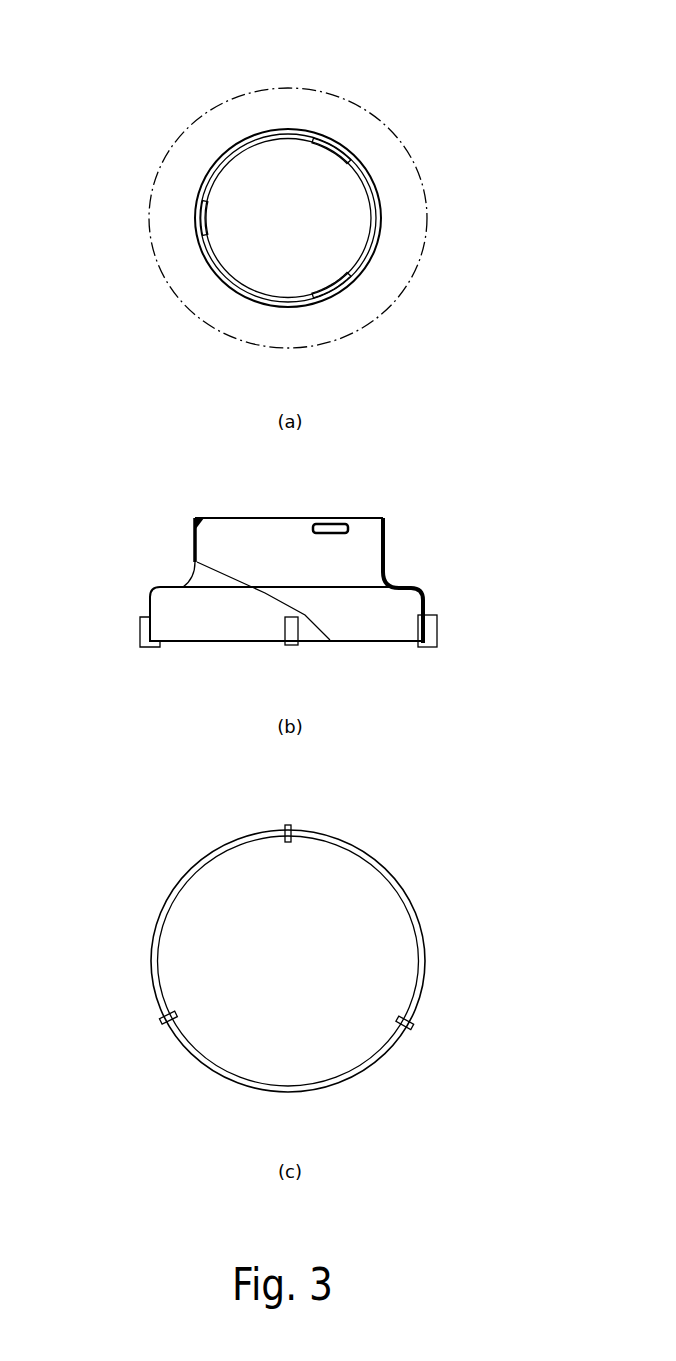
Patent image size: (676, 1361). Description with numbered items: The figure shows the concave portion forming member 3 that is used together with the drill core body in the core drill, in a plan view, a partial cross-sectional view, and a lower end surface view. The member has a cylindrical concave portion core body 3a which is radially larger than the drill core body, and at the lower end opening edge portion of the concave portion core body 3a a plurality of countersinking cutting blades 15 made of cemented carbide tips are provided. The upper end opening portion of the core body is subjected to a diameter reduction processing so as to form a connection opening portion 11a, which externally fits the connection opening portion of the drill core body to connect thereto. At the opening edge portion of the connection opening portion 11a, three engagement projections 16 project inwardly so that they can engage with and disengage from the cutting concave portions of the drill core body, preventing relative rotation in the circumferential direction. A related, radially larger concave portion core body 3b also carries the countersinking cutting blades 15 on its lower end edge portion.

The concave portion forming member 3 is at (392, 107).
The concave portion core body 3a is at (408, 282).
The concave portion core body 3b is at (353, 518).
The connection opening portion 11a is at (247, 135).
The countersinking cutting blades 15 is at (437, 636).
The engagement projections 16 is at (330, 152).